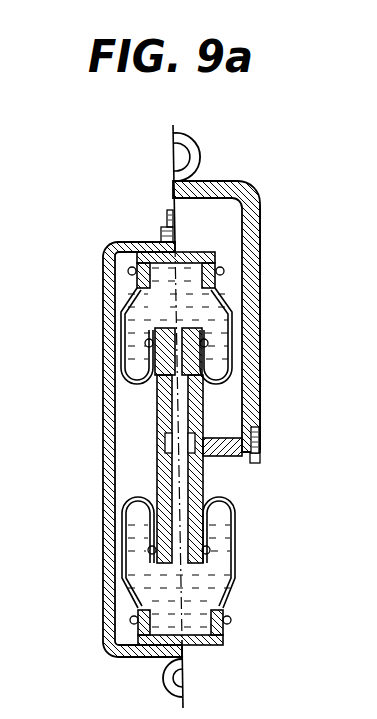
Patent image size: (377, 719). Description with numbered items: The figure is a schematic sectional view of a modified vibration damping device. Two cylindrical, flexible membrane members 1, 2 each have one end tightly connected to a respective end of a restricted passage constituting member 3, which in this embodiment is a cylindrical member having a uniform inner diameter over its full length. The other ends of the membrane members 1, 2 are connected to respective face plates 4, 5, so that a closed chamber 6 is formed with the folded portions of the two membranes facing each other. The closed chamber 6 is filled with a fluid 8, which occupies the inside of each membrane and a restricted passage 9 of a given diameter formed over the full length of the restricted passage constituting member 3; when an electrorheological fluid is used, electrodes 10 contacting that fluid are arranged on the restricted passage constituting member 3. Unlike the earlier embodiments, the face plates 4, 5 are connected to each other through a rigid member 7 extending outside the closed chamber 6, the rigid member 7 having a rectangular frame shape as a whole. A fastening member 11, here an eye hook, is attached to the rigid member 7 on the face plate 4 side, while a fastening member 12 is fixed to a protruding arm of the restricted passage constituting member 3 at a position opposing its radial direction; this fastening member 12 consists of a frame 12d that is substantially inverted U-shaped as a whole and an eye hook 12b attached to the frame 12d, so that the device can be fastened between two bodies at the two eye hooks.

The membrane member 1 is at (233, 293).
The membrane member 2 is at (243, 564).
The restricted passage constituting member 3 is at (167, 401).
The face plate 4 is at (200, 247).
The face plate 5 is at (200, 648).
The closed chamber 6 is at (167, 315).
The rigid member 7 is at (103, 407).
The fluid 8 is at (130, 325).
The restricted passage 9 is at (203, 403).
The electrodes 10 is at (173, 452).
The fastening member 11 is at (163, 686).
The fastening member 12 is at (261, 233).
The eye hook 12b is at (195, 143).
The frame 12d is at (263, 323).